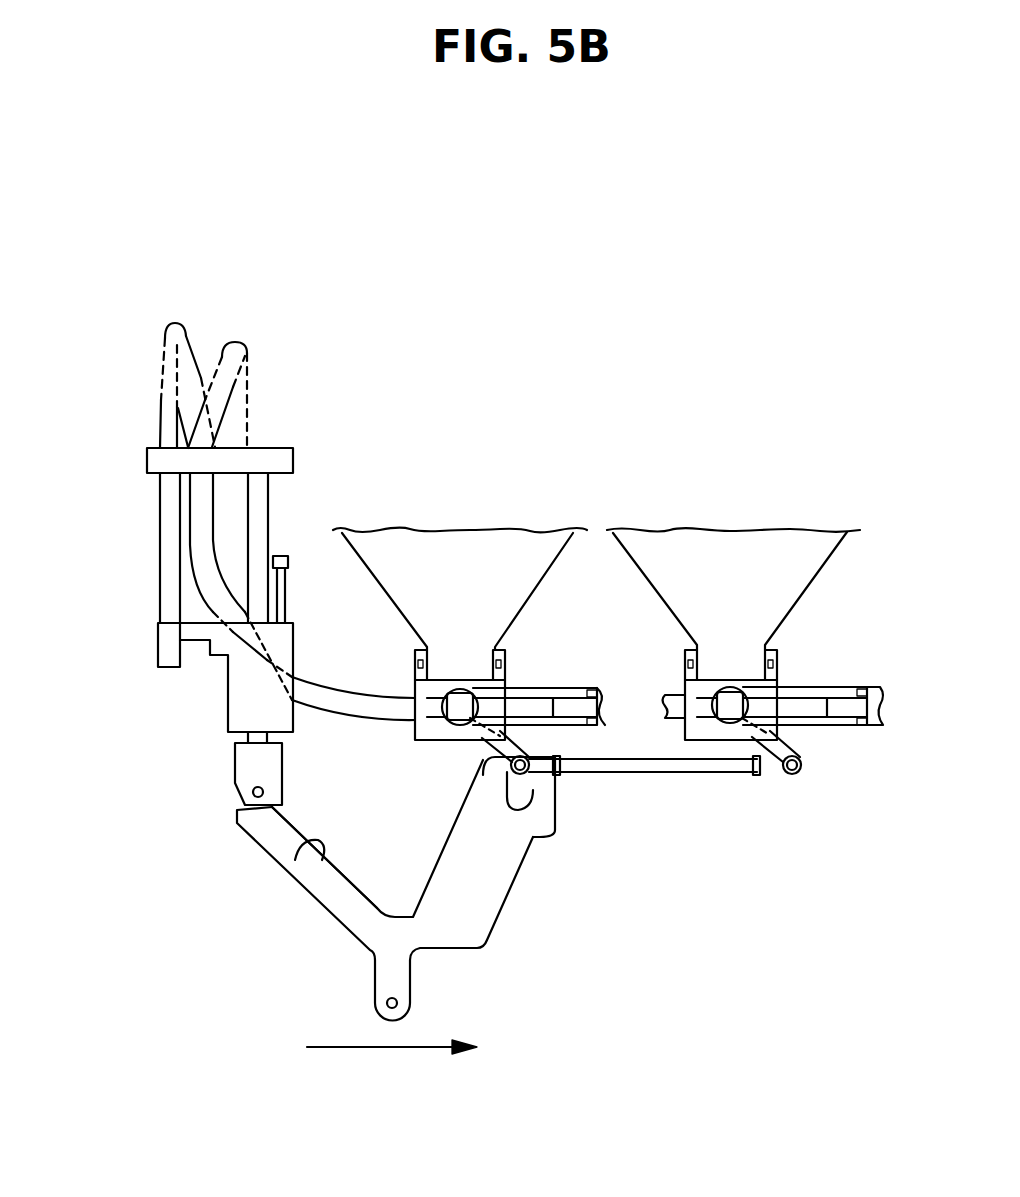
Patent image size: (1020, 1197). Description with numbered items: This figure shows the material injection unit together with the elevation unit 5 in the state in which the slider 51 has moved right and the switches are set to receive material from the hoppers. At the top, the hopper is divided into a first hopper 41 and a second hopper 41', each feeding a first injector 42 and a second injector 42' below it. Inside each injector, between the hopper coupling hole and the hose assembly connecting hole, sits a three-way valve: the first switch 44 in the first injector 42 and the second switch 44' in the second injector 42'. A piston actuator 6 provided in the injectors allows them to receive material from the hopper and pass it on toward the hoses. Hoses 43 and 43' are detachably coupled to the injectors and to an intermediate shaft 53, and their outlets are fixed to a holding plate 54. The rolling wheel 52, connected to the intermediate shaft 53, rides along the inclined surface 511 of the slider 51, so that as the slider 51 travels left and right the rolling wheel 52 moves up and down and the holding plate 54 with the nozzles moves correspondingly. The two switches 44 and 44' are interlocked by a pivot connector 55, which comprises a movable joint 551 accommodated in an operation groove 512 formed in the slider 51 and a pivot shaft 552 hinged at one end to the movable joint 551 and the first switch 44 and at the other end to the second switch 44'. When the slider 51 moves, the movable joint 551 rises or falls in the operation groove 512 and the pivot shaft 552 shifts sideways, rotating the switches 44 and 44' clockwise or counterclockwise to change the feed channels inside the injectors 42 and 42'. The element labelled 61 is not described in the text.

The hose 43 is at (233, 336).
The hose 43' is at (223, 350).
The holding plate 54 is at (278, 458).
The intermediate shaft 53 is at (262, 505).
The first injector 42 is at (305, 616).
The elevation unit 5 is at (205, 710).
The rolling wheel 52 is at (245, 760).
The slider 51 is at (487, 893).
The inclined surface 511 is at (322, 868).
The operation groove 512 is at (533, 793).
The first hopper 41 is at (483, 550).
The second hopper 41' is at (727, 563).
The first switch 44 is at (439, 697).
The second switch 44' is at (709, 694).
The conduit 61 is at (597, 686).
The second injector 42' is at (772, 672).
The piston actuator 6 is at (873, 716).
The pivot connector 55 is at (779, 792).
The movable joint 551 is at (587, 771).
The pivot shaft 552 is at (727, 775).